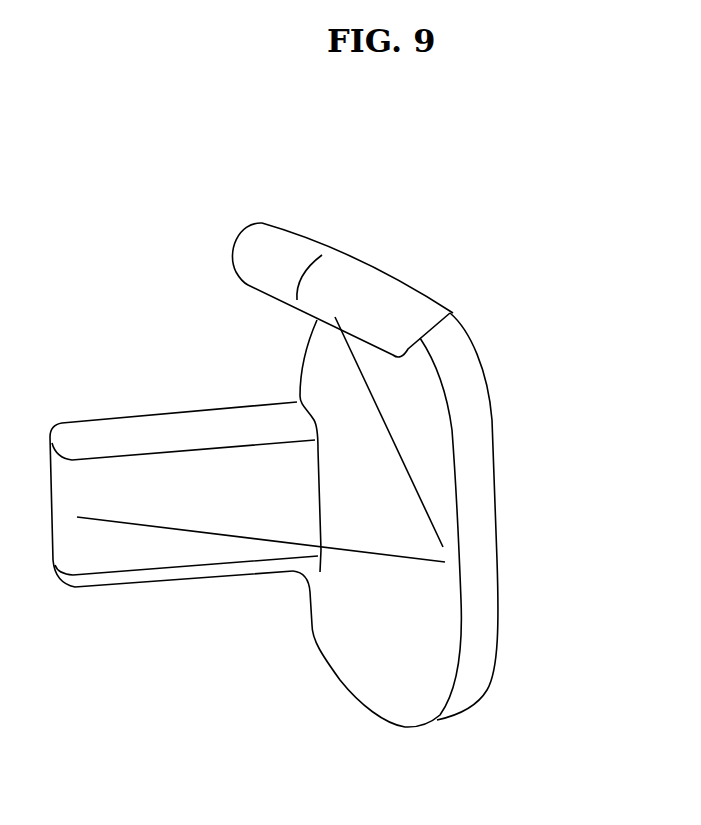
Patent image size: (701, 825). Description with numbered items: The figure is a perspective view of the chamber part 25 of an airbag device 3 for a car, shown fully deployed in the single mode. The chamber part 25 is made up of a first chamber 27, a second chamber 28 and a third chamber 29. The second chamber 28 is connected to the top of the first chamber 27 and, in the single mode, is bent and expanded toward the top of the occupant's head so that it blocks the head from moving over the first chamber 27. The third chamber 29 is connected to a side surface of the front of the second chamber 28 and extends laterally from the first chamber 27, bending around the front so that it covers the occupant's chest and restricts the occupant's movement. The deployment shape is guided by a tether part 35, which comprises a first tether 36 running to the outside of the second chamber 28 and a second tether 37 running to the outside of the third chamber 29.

The fastening clip 3 is at (375, 209).
The second chamber 28 is at (393, 295).
The chamber part 25 is at (497, 377).
The first chamber 27 is at (440, 503).
The first tether 36 is at (410, 478).
The third chamber 29 is at (110, 563).
The second tether 37 is at (215, 533).
The tether part 35 is at (371, 572).